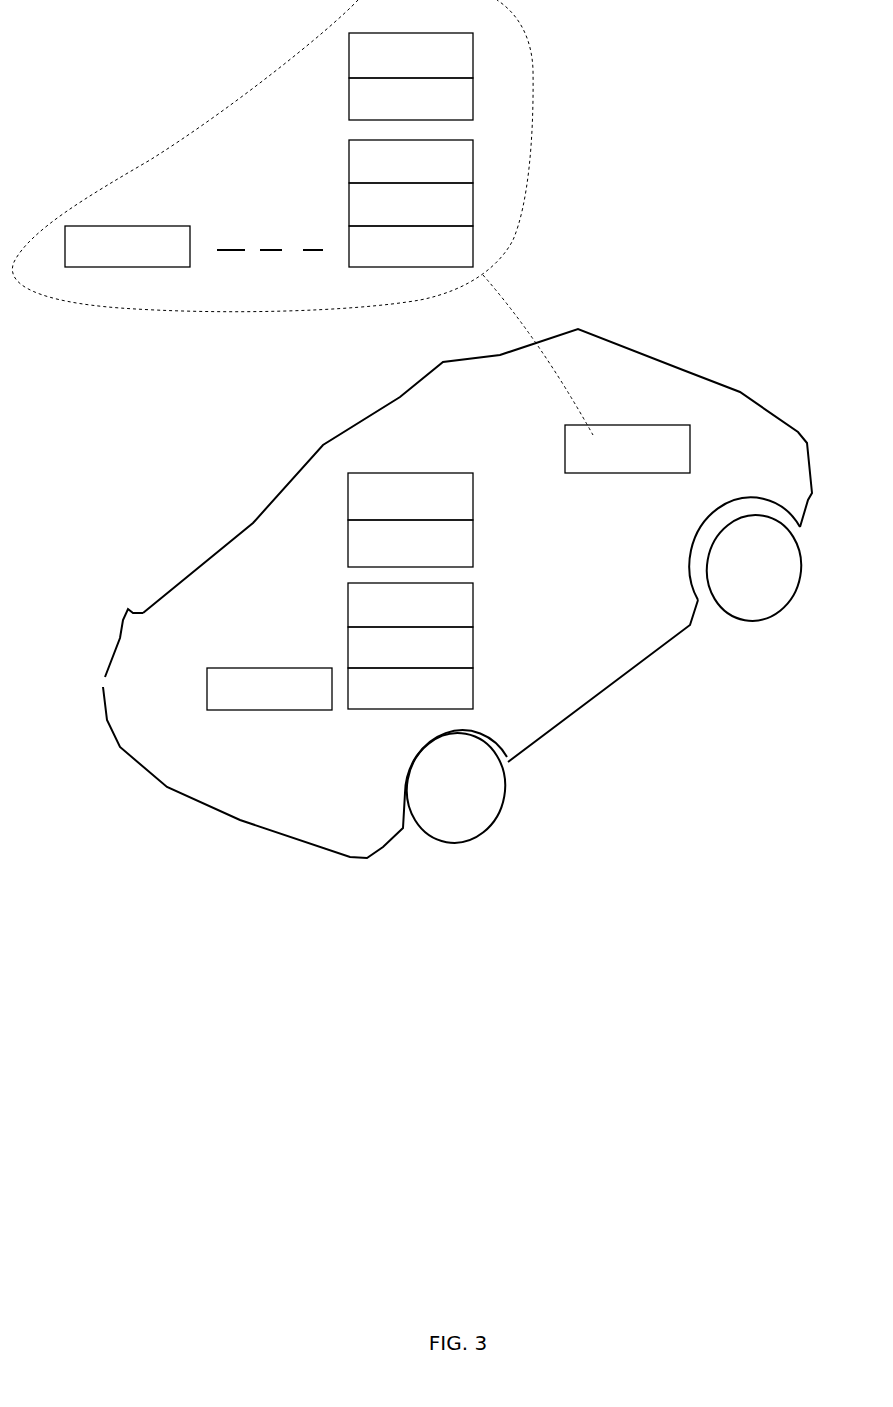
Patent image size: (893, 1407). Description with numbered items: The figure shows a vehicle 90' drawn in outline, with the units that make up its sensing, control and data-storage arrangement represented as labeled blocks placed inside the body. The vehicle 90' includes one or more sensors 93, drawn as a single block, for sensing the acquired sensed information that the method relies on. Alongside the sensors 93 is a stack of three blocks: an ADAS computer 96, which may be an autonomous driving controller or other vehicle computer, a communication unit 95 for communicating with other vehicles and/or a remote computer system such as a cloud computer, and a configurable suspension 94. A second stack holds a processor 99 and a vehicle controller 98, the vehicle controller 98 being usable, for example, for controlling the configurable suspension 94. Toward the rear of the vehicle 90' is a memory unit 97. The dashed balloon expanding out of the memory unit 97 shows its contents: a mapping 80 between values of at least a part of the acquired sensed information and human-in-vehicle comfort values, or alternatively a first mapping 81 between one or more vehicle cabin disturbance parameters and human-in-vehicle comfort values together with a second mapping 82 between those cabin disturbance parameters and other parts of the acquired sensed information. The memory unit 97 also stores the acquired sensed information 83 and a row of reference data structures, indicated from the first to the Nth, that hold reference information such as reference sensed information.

The mapping 80 is at (411, 161).
The first mapping 81 is at (411, 55).
The second mapping 82 is at (411, 99).
The acquired sensed information 83 is at (411, 204).
The vehicle 90' is at (457, 593).
The sensors 93 is at (269, 689).
The configurable suspension 94 is at (410, 688).
The communication unit 95 is at (410, 647).
The ADAS computer 96 is at (410, 605).
The memory unit 97 is at (627, 449).
The vehicle controller 98 is at (410, 543).
The processor 99 is at (410, 496).